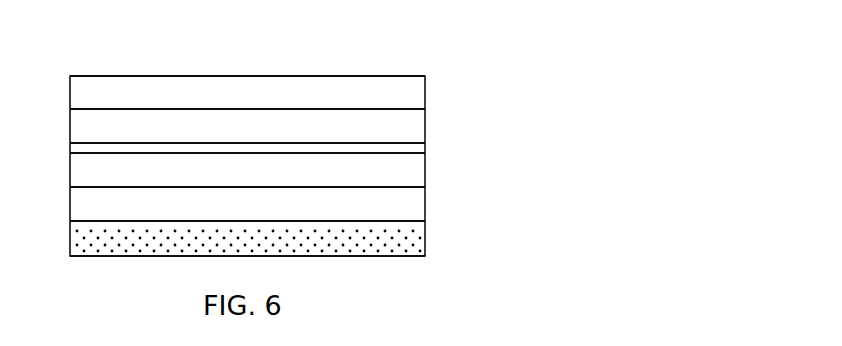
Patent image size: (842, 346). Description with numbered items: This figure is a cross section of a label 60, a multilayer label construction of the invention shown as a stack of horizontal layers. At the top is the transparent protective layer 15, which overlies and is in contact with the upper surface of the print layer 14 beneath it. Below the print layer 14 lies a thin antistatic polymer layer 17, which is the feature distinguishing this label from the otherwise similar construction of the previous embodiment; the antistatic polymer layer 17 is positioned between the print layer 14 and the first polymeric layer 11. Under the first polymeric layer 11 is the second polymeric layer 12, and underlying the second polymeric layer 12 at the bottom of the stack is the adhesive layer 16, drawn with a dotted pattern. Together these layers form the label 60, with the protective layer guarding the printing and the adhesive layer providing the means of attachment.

The label 60 is at (136, 60).
The transparent protective layer 15 is at (403, 87).
The print layer 14 is at (413, 121).
The antistatic polymer layer 17 is at (407, 152).
The first polymeric layer 11 is at (413, 165).
The second polymeric layer 12 is at (413, 199).
The adhesive layer 16 is at (415, 243).